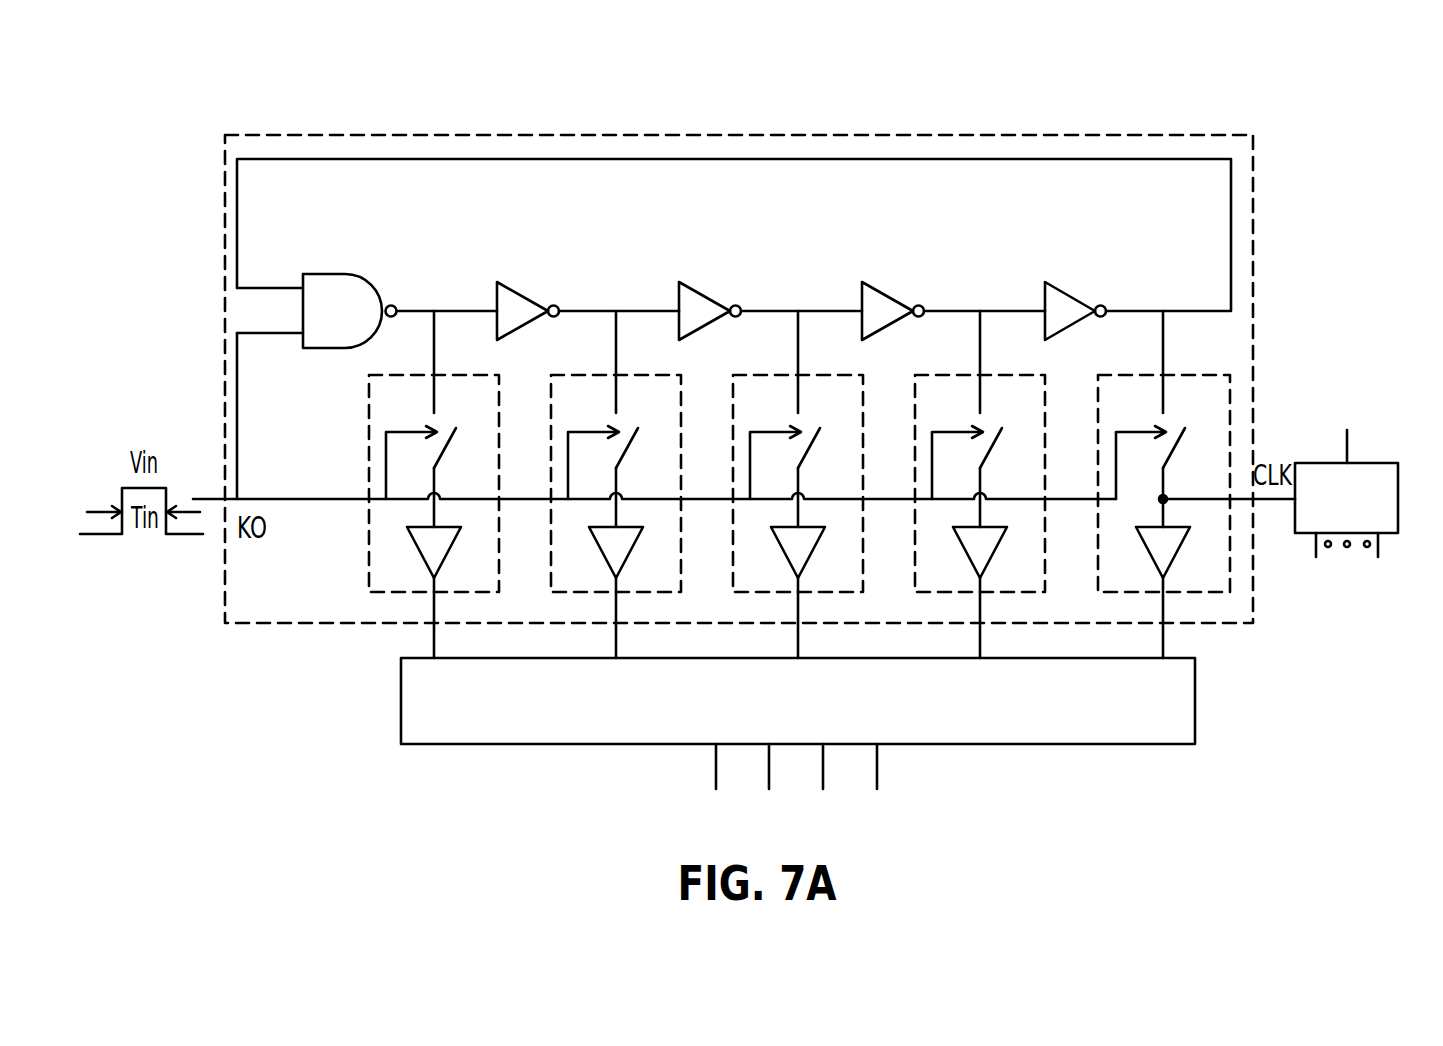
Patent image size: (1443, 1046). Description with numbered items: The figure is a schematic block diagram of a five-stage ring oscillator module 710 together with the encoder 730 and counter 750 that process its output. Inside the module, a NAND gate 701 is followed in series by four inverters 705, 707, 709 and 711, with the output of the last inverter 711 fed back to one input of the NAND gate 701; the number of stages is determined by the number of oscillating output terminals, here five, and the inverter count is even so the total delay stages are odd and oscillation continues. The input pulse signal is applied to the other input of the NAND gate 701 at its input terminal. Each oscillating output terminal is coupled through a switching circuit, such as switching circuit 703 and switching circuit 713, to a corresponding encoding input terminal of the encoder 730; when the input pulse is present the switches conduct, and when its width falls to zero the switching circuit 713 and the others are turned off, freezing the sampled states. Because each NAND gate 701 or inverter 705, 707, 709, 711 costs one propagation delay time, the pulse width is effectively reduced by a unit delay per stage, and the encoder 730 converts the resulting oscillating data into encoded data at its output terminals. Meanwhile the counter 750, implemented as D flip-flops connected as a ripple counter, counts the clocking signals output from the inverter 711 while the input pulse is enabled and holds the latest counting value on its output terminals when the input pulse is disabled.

The NAND gate 701 is at (355, 274).
The switching circuit 703 is at (369, 522).
The inverter 705 is at (523, 293).
The inverter 707 is at (705, 296).
The inverter 709 is at (888, 296).
The ring oscillator module 710 is at (739, 346).
The inverter 711 is at (1070, 294).
The switching circuit 713 is at (1020, 373).
The encoder 730 is at (1113, 745).
The counter 750 is at (1367, 463).